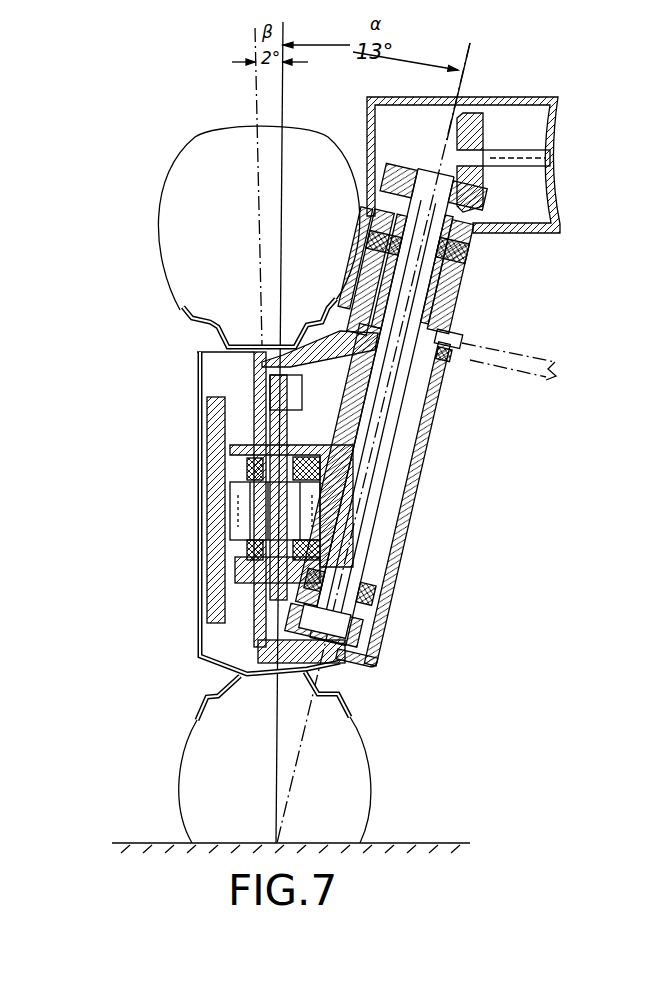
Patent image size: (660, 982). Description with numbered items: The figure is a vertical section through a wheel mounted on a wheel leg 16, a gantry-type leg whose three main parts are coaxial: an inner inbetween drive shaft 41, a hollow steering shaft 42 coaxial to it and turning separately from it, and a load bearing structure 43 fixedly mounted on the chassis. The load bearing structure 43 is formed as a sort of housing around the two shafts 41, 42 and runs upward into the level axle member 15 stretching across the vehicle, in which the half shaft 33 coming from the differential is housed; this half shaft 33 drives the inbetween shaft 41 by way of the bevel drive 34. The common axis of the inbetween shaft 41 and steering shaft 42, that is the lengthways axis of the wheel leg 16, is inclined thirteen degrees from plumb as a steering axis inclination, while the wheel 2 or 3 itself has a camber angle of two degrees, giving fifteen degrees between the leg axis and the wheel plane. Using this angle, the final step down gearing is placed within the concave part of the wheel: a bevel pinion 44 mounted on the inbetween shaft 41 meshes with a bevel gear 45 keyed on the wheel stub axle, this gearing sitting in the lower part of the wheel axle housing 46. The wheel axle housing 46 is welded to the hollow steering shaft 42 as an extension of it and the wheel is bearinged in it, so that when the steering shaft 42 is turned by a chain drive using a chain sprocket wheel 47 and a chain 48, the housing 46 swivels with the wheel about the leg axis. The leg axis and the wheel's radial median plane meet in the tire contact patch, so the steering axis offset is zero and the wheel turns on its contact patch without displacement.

The front wheel 2 is at (167, 204).
The back wheel 3 is at (240, 519).
The axle member 15 is at (530, 99).
The wheel leg 16 is at (440, 340).
The half shaft 33 is at (532, 150).
The bevel drive 34 is at (483, 192).
The inbetween drive shaft 41 is at (440, 270).
The hollow steering shaft 42 is at (443, 281).
The load bearing structure 43 is at (467, 304).
The bevel pinion 44 is at (297, 630).
The bevel gear 45 is at (283, 597).
The wheel axle housing 46 is at (393, 437).
The chain sprocket wheel 47 is at (453, 350).
The chain 48 is at (537, 380).